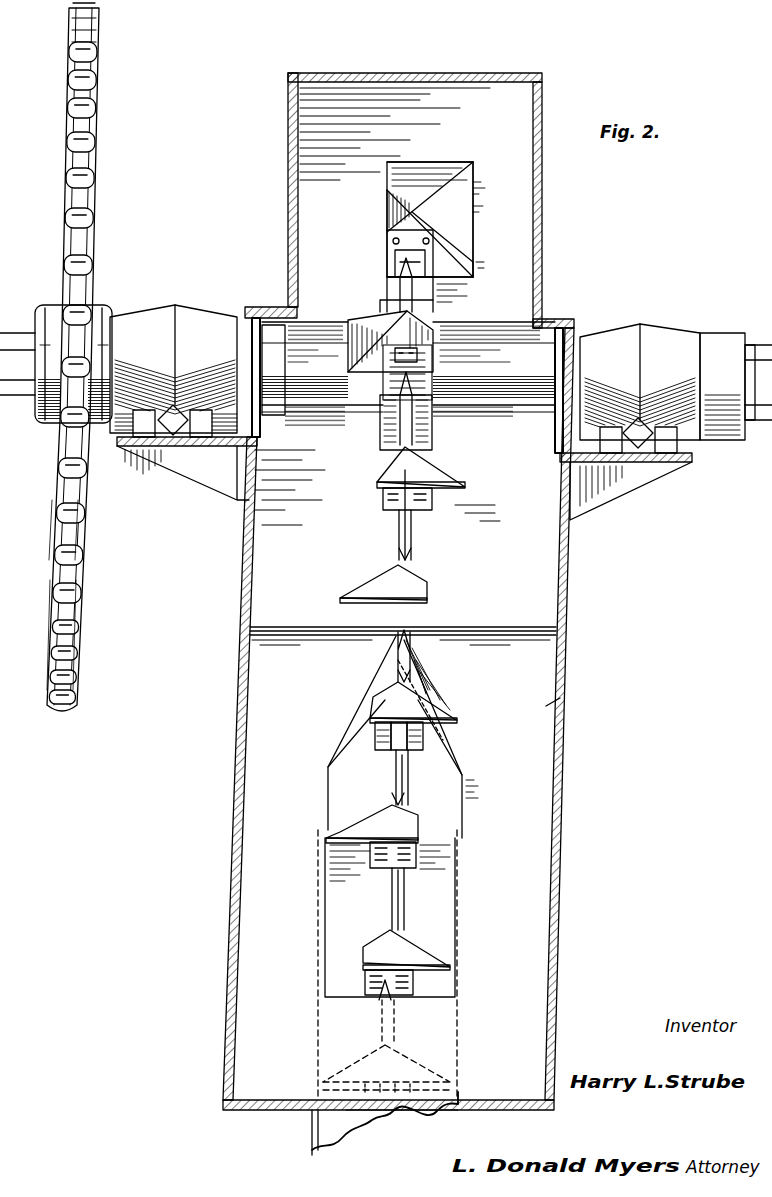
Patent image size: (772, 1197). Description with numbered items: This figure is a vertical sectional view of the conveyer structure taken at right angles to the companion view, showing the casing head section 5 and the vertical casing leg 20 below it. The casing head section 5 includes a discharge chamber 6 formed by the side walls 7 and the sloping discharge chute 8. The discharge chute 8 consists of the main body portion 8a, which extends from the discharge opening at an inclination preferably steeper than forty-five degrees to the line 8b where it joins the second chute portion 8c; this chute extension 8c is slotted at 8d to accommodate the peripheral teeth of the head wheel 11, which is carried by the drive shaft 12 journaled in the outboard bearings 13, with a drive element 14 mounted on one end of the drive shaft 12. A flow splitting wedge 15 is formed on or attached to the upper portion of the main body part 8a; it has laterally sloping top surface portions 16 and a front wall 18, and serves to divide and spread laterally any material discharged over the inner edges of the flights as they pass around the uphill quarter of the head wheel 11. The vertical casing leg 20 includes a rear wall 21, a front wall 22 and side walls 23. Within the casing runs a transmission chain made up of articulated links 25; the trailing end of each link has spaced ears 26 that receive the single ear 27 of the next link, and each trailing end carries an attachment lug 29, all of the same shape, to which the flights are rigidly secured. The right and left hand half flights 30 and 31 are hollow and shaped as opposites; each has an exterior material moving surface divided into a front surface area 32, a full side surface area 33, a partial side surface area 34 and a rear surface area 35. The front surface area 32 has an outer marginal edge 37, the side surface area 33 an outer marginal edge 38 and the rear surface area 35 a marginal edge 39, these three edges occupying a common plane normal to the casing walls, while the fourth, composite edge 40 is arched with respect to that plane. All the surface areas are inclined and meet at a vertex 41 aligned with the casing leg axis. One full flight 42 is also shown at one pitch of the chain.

The housing 5 is at (568, 756).
The discharge chamber 6 is at (290, 556).
The side walls 7 is at (234, 868).
The sloping discharge chute 8 is at (540, 972).
The main body portion 8a is at (555, 708).
The line 8b is at (474, 634).
The second chute portion 8c is at (508, 531).
The slot 8d is at (370, 496).
The head wheel 11 is at (432, 434).
The drive shaft 12 is at (338, 398).
The outboard bearings 13 is at (184, 304).
The drive element 14 is at (75, 612).
The flow splitting wedge 15 is at (464, 804).
The laterally sloping top surface portions 16 is at (424, 690).
The front wall 18 is at (326, 790).
The vertical casing leg 20 is at (308, 1144).
The rear wall 21 is at (322, 916).
The front wall 22 is at (322, 1126).
The side walls 23 is at (316, 1056).
The articulated links 25 is at (412, 546).
The spaced ears 26 is at (380, 750).
The single ear 27 is at (406, 760).
The attachment lug 29 is at (381, 262).
The right hand half flight 30 is at (473, 202).
The left hand half flight 31 is at (366, 304).
The front surface area 32 is at (426, 170).
The full side surface area 33 is at (472, 234).
The partial side surface area 34 is at (387, 210).
The rear surface area 35 is at (454, 282).
The outer marginal edge 37 is at (458, 162).
The outer marginal edge 38 is at (470, 270).
The marginal edge 39 is at (452, 286).
The composite edge 40 is at (387, 174).
The vertex 41 is at (396, 558).
The full flight 42 is at (450, 1084).